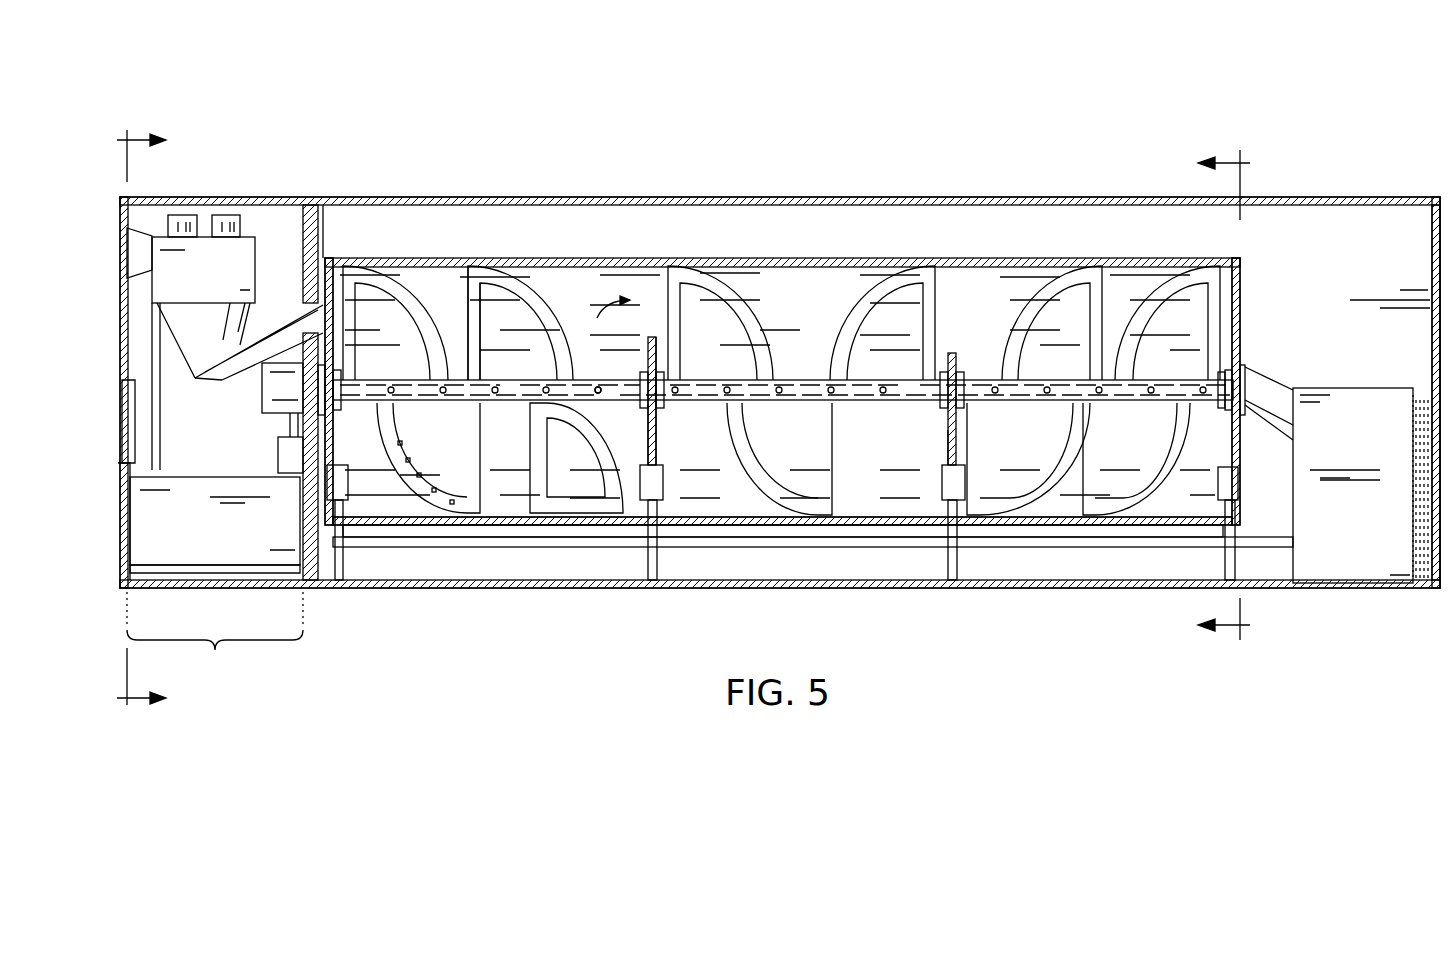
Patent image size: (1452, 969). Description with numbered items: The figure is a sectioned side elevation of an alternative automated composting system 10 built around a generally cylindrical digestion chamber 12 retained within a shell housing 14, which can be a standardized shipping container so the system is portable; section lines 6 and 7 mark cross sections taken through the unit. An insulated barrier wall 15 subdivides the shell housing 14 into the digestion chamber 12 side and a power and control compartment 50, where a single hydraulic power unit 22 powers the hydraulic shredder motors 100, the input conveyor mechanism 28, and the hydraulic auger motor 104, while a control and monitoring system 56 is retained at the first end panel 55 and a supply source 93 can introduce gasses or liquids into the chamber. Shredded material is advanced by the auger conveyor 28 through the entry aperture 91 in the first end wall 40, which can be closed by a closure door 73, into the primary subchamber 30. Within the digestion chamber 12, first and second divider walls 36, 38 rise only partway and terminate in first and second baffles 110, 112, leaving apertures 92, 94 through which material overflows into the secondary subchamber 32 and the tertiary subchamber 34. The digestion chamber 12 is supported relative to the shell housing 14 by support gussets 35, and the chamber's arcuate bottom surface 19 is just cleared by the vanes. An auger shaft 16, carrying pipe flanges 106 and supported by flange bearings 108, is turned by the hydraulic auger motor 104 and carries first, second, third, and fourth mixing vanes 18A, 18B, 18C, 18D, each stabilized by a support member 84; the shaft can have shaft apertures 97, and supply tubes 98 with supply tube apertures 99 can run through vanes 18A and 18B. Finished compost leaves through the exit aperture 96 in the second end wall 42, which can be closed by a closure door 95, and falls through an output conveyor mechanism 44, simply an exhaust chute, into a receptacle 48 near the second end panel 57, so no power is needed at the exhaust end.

The composting system 10 is at (400, 78).
The section line 6- 6 is at (210, 419).
The section line 7- 7 is at (1213, 395).
The digestion chamber 12 is at (618, 252).
The shell housing 14 is at (584, 195).
The barrier wall 15 is at (303, 265).
The auger shaft 16 is at (790, 405).
The first mixing vane 18A is at (420, 290).
The second mixing vane 18B is at (408, 440).
The third mixing vane 18C is at (538, 290).
The fourth mixing vane 18D is at (545, 455).
The arcuate bottom surface 19 is at (545, 505).
The hydraulic power unit 22 is at (232, 560).
The input conveyor mechanism 28 is at (235, 378).
The primary subchamber 30 is at (500, 505).
The secondary subchamber 32 is at (735, 503).
The tertiary subchamber 34 is at (1060, 503).
The support gussets 35 is at (942, 478).
The first divider wall 36 is at (656, 440).
The second divider wall 38 is at (948, 436).
The first end wall 40 is at (325, 262).
The second end wall 42 is at (1240, 285).
The output conveyor mechanism 44 is at (1272, 380).
The receptacle 48 is at (1365, 388).
The power and control compartment 50 is at (215, 654).
The first end panel 55 is at (118, 510).
The control and monitoring system 56 is at (128, 443).
The second end panel 57 is at (1432, 238).
The closure door 73 is at (312, 315).
The support member 84 is at (470, 290).
The entry aperture 91 is at (333, 322).
The aperture 92 is at (603, 318).
The supply source 93 is at (278, 455).
The aperture 94 is at (960, 300).
The closure door 95 is at (1245, 365).
The exit aperture 96 is at (1245, 400).
The shaft apertures 97 is at (598, 390).
The supply tubes 98 is at (382, 418).
The supply tube apertures 99 is at (412, 455).
The hydraulic shredder motors 100 is at (225, 215).
The hydraulic auger motor 104 is at (262, 395).
The pipe flanges 106 is at (640, 425).
The flange bearings 108 is at (660, 412).
The first baffle 110 is at (660, 345).
The second baffle 112 is at (958, 362).